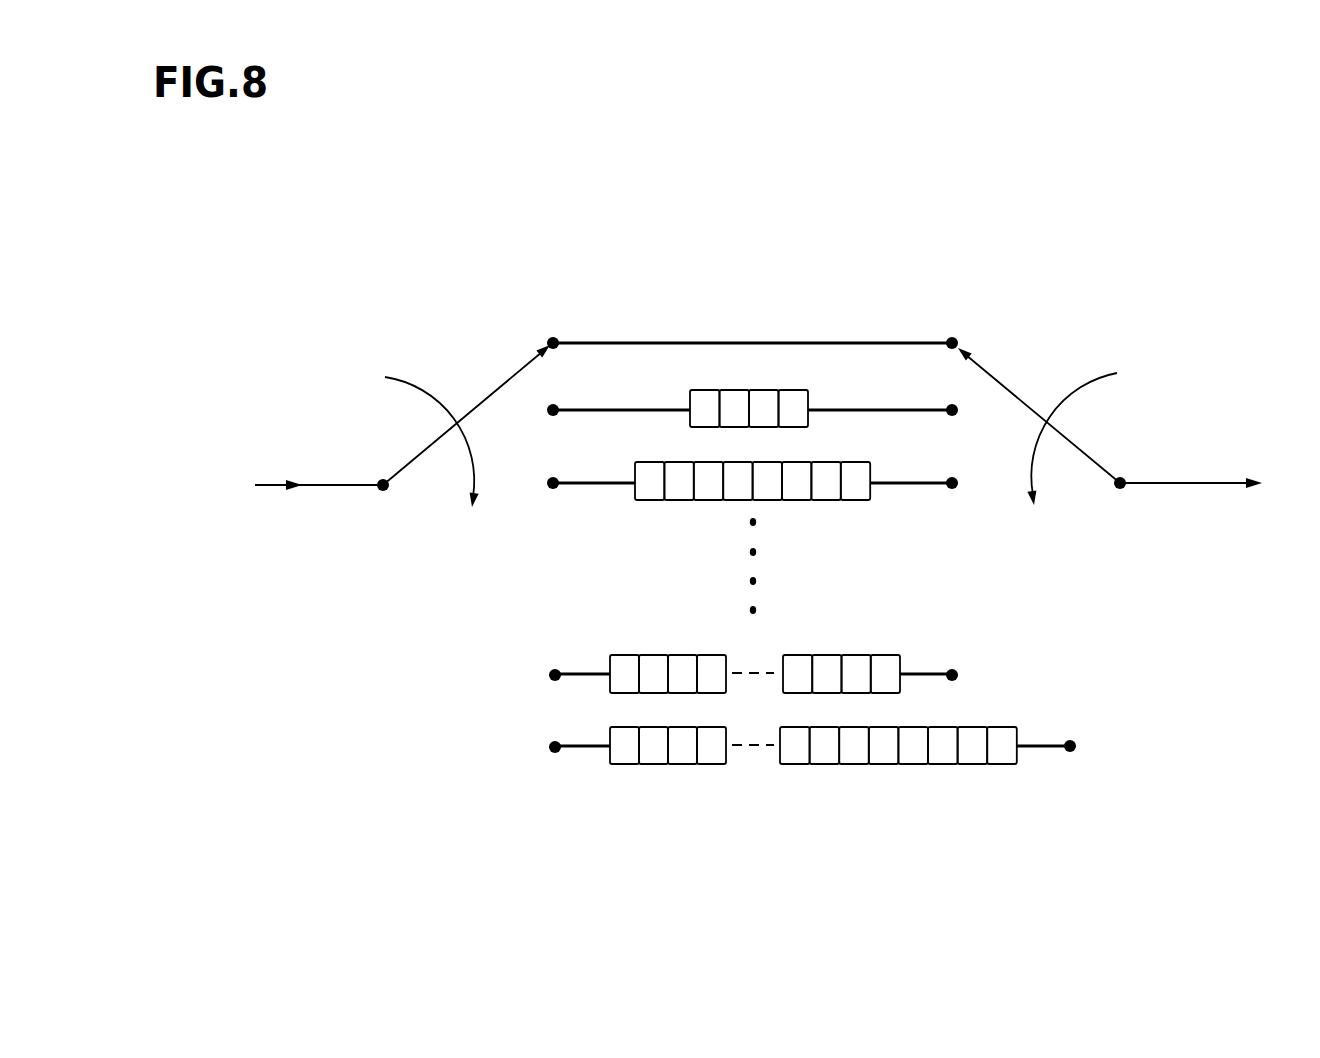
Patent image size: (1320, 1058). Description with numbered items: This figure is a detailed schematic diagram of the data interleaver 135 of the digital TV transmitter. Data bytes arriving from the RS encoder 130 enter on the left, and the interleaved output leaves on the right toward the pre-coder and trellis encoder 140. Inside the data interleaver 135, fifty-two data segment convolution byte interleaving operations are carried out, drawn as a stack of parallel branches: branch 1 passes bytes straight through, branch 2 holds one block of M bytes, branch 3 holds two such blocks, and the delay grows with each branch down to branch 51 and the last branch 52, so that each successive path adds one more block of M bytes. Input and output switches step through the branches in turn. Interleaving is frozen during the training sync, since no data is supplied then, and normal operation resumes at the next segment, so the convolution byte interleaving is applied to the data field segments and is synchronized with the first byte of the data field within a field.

The data interleaver 135 is at (772, 293).
The RS encoder 130 is at (401, 463).
The trellis encoder 140 is at (1111, 481).
The interleaver row 1 (no delay) 1 is at (752, 331).
The interleaver row 2 (delay M) 2 is at (752, 397).
The interleaver row 3 (delay 2M) 3 is at (752, 471).
The interleaver row 51 (delay (B-2)M) 51 is at (753, 664).
The interleaver row 52 (delay (B-1)M) 52 is at (802, 735).